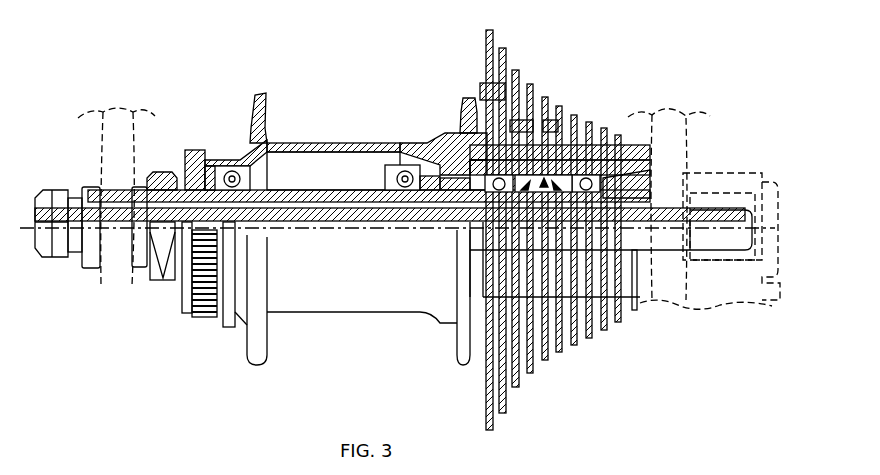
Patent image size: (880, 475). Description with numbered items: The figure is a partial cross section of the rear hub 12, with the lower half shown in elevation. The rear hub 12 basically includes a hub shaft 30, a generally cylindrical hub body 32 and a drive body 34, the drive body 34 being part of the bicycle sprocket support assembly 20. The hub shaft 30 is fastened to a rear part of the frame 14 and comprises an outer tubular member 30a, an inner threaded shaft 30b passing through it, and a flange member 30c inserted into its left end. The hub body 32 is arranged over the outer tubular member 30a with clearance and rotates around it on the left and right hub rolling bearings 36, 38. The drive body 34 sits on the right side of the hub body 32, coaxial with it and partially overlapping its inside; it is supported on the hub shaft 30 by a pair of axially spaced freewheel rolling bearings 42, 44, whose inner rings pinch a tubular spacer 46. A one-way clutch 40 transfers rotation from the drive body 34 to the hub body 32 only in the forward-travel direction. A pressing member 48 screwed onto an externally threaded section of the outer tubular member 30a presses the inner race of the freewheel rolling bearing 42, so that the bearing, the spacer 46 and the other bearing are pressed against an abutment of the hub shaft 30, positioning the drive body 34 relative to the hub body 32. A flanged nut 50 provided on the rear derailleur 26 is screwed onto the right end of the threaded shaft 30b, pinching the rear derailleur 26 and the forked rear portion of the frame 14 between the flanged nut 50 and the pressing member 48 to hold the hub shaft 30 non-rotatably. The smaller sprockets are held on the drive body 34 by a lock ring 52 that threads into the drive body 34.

The rear hub 12 is at (224, 42).
The frame 14 is at (92, 148).
The bicycle sprocket support assembly 20 is at (598, 86).
The rear derailleur 26 is at (706, 316).
The hub shaft 30 is at (330, 183).
The outer tubular member 30a is at (300, 203).
The inner threaded shaft 30b is at (340, 222).
The flange member 30c is at (160, 175).
The hub body 32 is at (313, 142).
The drive body 34 is at (541, 190).
The hub rolling bearing 36 is at (256, 178).
The hub rolling bearing 38 is at (374, 177).
The one-way clutch 40 is at (448, 130).
The freewheel rolling bearing 42 is at (556, 172).
The freewheel rolling bearing 44 is at (537, 172).
The spacer 46 is at (553, 197).
The pressing member 48 is at (645, 185).
The flanged nut 50 is at (780, 202).
The lock ring 52 is at (642, 172).